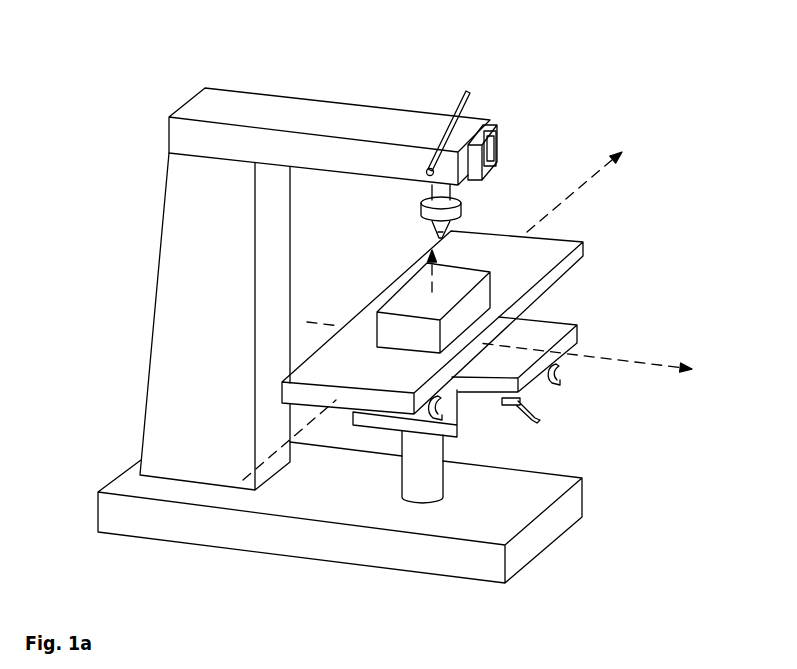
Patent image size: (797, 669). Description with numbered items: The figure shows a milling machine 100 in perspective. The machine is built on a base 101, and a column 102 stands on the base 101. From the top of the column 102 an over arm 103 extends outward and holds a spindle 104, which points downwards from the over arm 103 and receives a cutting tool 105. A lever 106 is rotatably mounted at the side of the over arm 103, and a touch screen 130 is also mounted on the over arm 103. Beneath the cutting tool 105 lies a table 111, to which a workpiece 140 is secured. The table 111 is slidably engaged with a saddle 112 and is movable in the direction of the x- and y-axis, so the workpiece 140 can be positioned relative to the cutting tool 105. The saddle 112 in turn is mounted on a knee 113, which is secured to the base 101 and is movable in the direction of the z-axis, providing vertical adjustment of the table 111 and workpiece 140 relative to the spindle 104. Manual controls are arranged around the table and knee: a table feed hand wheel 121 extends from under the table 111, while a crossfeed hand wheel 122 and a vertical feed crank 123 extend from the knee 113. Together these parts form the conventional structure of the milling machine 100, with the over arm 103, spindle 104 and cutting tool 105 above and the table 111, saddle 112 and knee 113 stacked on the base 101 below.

The milling machine 100 is at (670, 102).
The base 101 is at (117, 512).
The column 102 is at (165, 260).
The over arm 103 is at (415, 123).
The spindle 104 is at (463, 207).
The cutting tool 105 is at (432, 227).
The lever 106 is at (472, 89).
The table 111 is at (550, 241).
The saddle 112 is at (574, 338).
The knee 113 is at (368, 427).
The table feed hand wheel 121 is at (444, 420).
The crossfeed hand wheel 122 is at (562, 378).
The vertical feed crank 123 is at (545, 418).
The touch screen 130 is at (493, 132).
The workpiece 140 is at (493, 287).